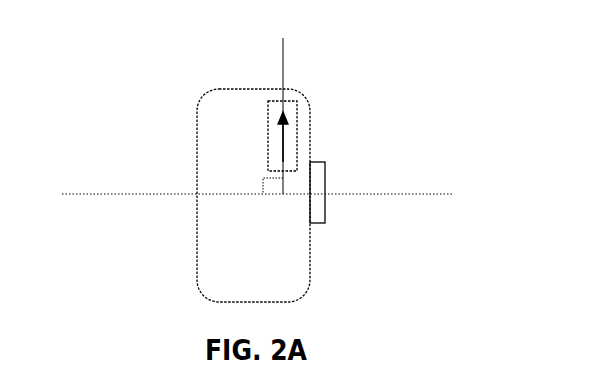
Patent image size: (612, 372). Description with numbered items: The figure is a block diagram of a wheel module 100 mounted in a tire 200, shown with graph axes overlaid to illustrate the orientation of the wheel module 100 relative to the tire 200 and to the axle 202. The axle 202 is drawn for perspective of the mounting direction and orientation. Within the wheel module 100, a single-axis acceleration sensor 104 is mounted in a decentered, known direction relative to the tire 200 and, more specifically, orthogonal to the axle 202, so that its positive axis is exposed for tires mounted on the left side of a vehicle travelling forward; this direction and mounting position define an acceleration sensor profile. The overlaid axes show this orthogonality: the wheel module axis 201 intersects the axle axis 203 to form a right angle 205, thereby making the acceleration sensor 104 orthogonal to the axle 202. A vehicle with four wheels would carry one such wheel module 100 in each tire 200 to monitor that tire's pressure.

The wheel module 100 is at (292, 103).
The single-axis acceleration sensor 104 is at (283, 139).
The tire 200 is at (197, 100).
The wheel module axis 201 is at (282, 106).
The axle 202 is at (323, 162).
The axle axis 203 is at (278, 194).
The right angle 205 is at (268, 183).